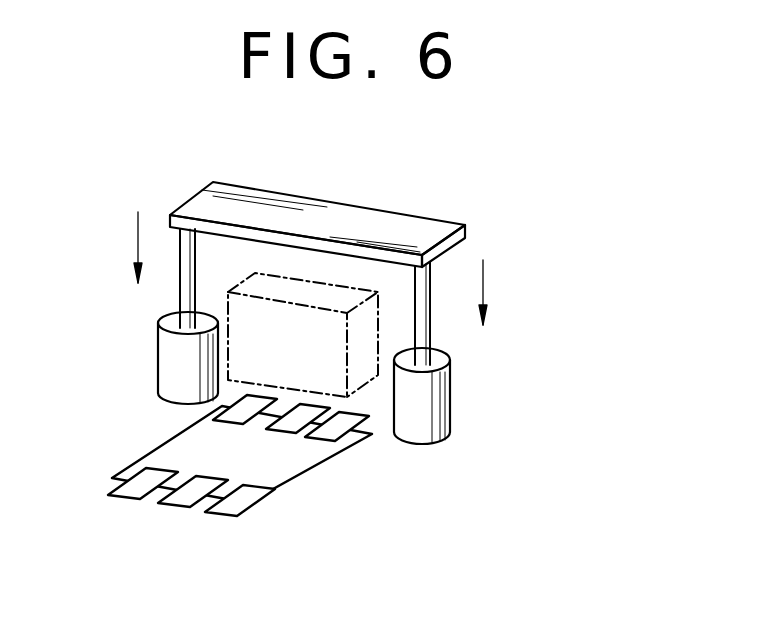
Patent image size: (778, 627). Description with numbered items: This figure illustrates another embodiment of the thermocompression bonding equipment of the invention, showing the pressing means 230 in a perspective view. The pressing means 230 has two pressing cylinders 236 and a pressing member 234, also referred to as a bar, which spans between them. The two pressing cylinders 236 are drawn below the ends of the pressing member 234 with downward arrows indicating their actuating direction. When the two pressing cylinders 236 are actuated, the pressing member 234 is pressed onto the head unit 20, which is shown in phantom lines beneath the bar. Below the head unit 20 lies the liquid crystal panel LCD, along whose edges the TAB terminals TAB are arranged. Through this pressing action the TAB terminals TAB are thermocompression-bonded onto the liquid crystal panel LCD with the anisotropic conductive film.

The head unit 20 is at (323, 291).
The pressing means 230 is at (365, 313).
The pressing member 234 is at (433, 227).
The pressing cylinders 236 is at (173, 358).
The TAB terminals TAB is at (330, 430).
The liquid crystal panel LCD is at (280, 480).